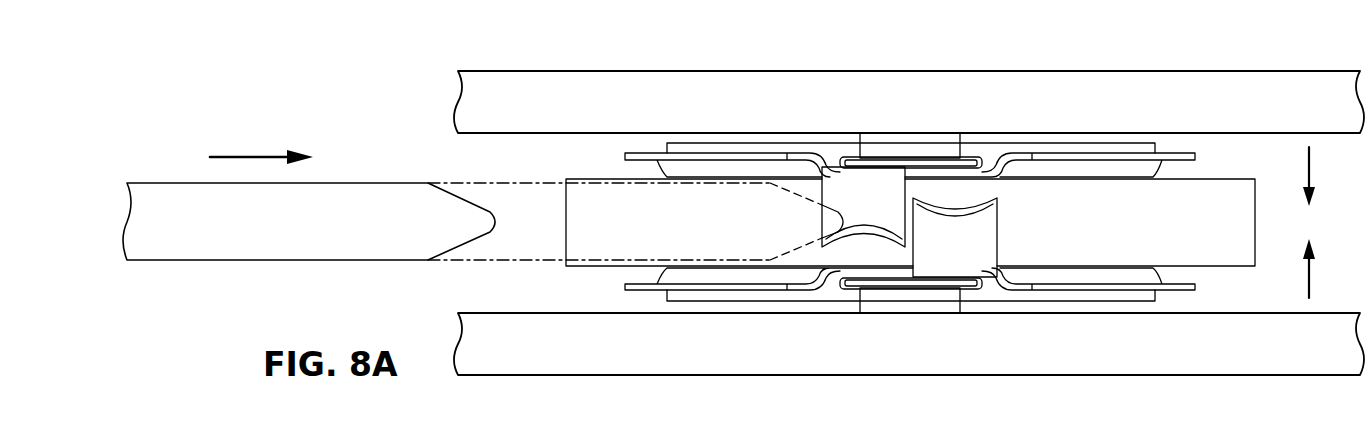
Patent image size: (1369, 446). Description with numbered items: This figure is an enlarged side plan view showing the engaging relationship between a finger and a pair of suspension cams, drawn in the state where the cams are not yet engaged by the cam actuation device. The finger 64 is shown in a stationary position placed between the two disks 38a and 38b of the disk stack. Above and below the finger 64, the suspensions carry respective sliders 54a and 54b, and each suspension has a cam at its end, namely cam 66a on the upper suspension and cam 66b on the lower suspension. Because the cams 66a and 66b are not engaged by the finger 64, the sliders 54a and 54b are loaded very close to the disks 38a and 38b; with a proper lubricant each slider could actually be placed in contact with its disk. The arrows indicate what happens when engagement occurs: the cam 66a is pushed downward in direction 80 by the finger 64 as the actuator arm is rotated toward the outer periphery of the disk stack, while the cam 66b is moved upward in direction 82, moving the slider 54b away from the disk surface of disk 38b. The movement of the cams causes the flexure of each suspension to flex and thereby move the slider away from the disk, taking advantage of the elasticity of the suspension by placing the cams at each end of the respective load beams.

The disk 38a is at (1313, 80).
The disk 38b is at (1293, 363).
The finger 64 is at (363, 190).
The slider 54a is at (913, 146).
The slider 54b is at (912, 300).
The cam 66a is at (895, 205).
The cam 66b is at (976, 257).
The direction 80 is at (1324, 176).
The direction 82 is at (1324, 270).